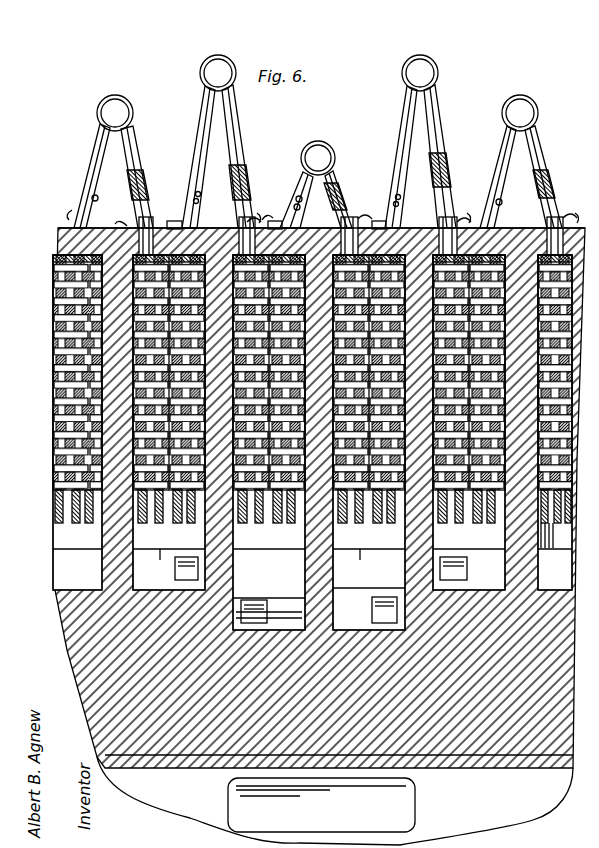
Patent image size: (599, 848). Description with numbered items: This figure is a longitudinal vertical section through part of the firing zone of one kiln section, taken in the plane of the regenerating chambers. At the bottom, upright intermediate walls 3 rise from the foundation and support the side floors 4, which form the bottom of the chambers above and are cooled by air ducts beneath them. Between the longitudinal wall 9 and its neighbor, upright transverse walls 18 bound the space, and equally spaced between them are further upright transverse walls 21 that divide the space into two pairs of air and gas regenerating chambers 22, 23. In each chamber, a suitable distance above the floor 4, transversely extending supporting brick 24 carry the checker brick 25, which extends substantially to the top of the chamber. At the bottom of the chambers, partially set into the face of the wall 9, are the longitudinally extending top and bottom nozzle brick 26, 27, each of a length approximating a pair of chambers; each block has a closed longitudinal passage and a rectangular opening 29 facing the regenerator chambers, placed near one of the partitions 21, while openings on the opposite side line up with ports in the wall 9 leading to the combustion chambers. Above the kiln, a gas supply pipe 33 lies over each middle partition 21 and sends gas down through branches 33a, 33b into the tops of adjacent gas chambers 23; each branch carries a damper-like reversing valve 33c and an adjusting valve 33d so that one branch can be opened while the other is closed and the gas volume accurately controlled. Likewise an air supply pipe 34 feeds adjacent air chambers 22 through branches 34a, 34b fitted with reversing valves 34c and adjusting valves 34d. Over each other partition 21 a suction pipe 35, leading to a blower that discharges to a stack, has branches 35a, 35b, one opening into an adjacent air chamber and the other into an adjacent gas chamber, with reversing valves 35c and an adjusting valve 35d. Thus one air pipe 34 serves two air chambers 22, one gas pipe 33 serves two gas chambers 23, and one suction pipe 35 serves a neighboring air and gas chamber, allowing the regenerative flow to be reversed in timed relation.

The intermediate walls 3 is at (190, 812).
The side floors 4 is at (572, 672).
The wall 9 is at (574, 500).
The upright transverse walls 18 is at (102, 522).
The upright transverse walls 21 is at (206, 518).
The air regenerating chamber 22 is at (172, 232).
The gas regenerating chamber 23 is at (270, 226).
The supporting brick 24 is at (56, 507).
The checker brick 25 is at (60, 424).
The top nozzle brick 26 is at (160, 557).
The bottom nozzle brick 27 is at (288, 604).
The rectangular opening 29 is at (180, 560).
The gas supply pipe 33 is at (322, 135).
The gas pipe branch 33a is at (302, 180).
The gas pipe branch 33b is at (331, 177).
The reversing valve 33c is at (300, 195).
The adjusting valve 33d is at (286, 222).
The air supply pipe 34 is at (97, 113).
The air pipe branch 34a is at (93, 158).
The air pipe branch 34b is at (138, 162).
The reversing valve 34c is at (128, 195).
The adjusting valve 34d is at (124, 224).
The suction pipe 35 is at (208, 58).
The suction pipe branch 35a is at (205, 108).
The suction pipe branch 35b is at (236, 115).
The reversing valve 35c is at (228, 182).
The adjusting valve 35d is at (243, 222).